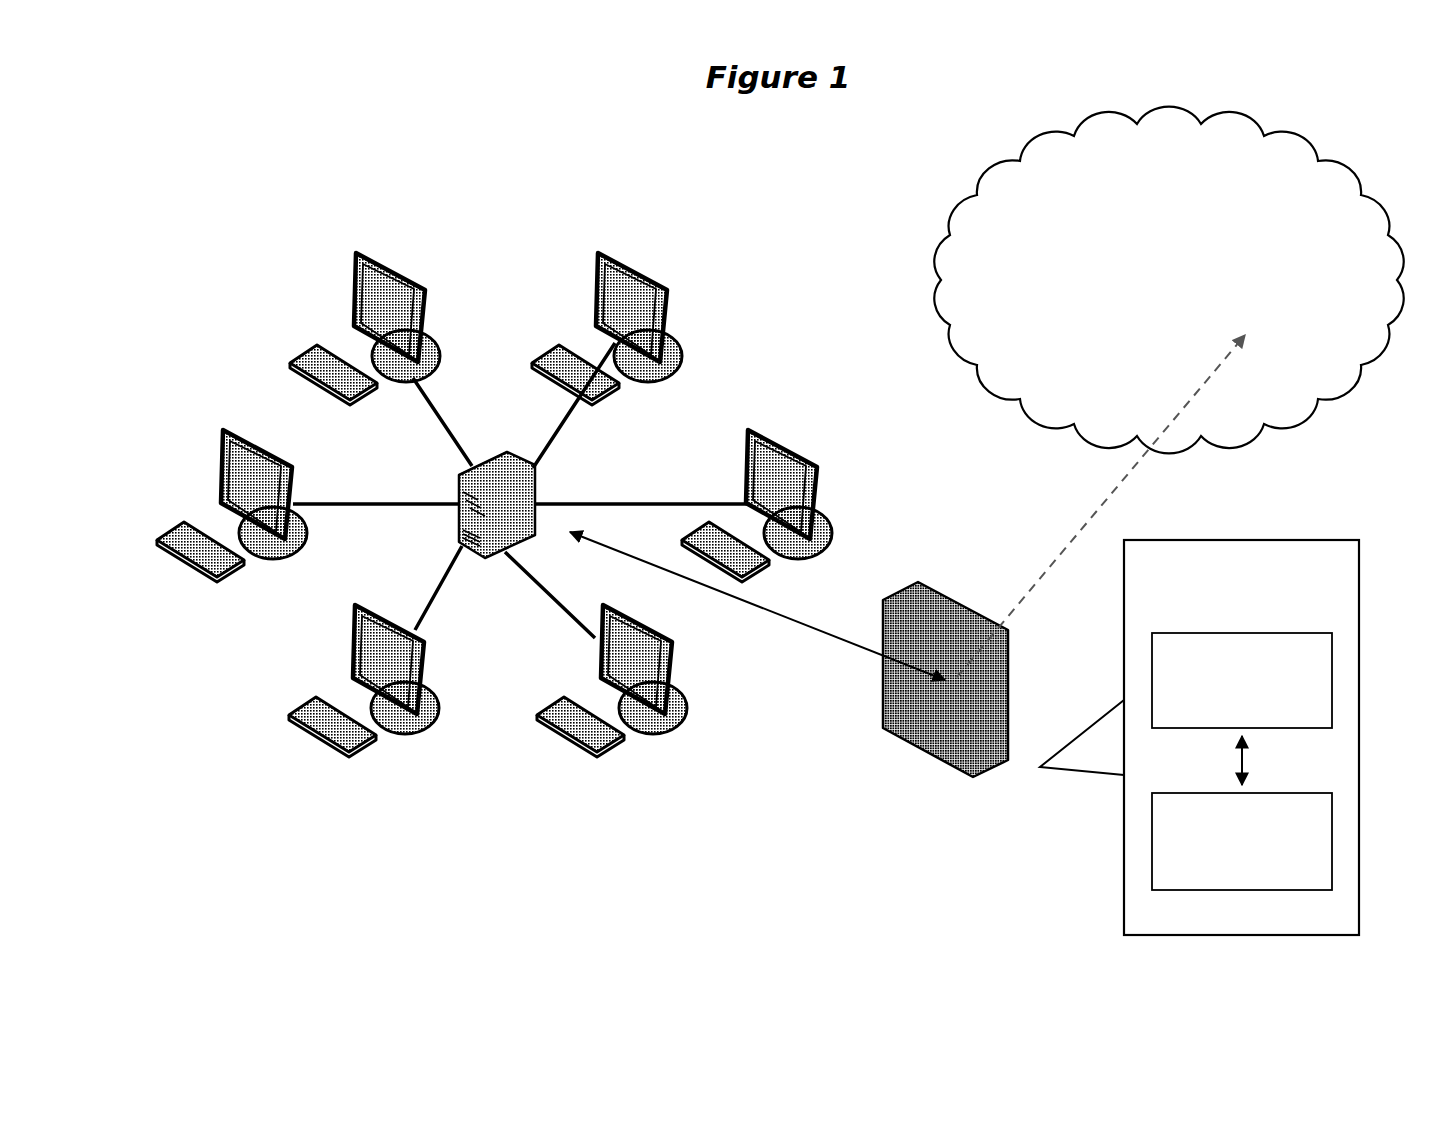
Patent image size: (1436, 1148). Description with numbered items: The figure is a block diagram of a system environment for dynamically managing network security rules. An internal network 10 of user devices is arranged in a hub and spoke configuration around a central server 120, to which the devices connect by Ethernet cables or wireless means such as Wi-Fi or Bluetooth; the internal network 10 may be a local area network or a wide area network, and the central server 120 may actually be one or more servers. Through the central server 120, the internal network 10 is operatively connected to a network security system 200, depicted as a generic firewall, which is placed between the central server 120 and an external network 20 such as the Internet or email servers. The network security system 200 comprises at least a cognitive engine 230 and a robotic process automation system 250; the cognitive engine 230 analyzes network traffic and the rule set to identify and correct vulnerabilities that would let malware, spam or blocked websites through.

The internal network 10 is at (480, 670).
The external network 20 is at (1168, 280).
The central server 120 is at (535, 482).
The network security system 200 is at (964, 635).
The cognitive engine 230 is at (1242, 680).
The robotic process automation system 250 is at (1242, 841).